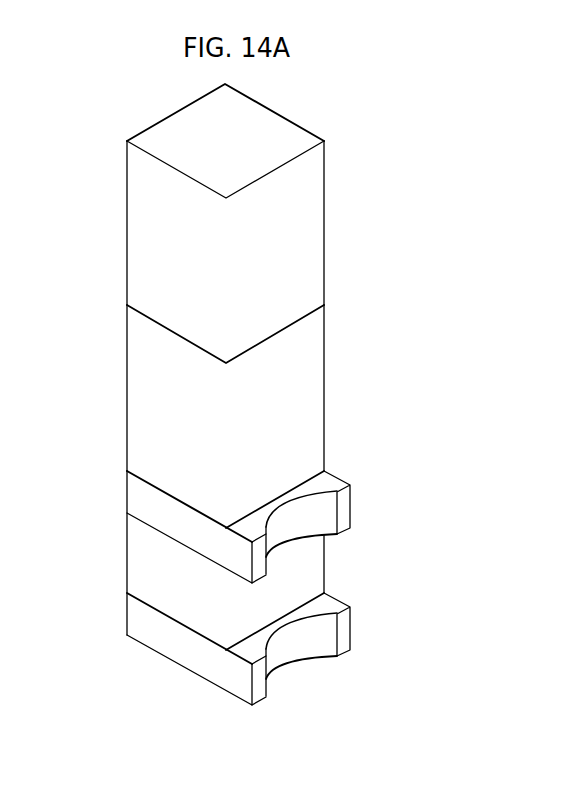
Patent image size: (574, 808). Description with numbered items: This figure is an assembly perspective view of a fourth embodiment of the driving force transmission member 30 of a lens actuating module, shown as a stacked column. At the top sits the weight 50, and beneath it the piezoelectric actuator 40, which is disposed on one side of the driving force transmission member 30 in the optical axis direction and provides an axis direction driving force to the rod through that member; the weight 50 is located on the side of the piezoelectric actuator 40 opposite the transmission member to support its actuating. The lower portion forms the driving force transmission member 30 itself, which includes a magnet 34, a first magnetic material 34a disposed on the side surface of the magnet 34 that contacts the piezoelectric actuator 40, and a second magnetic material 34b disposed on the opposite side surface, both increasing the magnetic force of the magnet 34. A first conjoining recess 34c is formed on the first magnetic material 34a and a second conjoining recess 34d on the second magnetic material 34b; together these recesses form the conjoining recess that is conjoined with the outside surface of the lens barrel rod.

The driving force transmission member 30 is at (124, 572).
The magnet 34 is at (137, 558).
The first magnetic material 34a is at (332, 480).
The second magnetic material 34b is at (332, 605).
The first conjoining recess 34c is at (318, 507).
The second conjoining recess 34d is at (318, 637).
The piezoelectric actuator 40 is at (308, 377).
The weight 50 is at (308, 237).